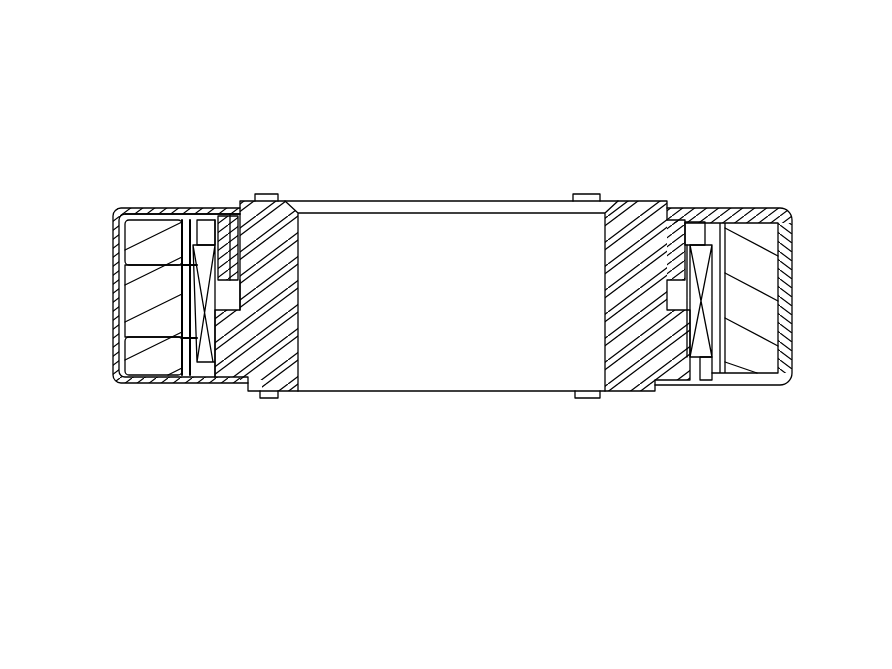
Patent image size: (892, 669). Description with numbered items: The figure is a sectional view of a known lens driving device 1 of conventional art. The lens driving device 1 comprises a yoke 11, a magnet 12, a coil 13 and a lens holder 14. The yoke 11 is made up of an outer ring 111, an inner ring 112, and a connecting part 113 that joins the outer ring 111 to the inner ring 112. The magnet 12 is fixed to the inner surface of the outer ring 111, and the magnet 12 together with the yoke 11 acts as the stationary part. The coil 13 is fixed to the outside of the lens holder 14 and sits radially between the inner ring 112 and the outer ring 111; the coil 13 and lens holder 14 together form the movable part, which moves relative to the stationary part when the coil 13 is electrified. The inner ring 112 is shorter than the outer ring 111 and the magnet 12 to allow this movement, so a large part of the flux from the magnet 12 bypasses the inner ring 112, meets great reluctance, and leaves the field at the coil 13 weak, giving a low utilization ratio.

The lens driving device 1 is at (570, 163).
The yoke 11 is at (63, 95).
The outer ring 111 is at (113, 230).
The inner ring 112 is at (228, 216).
The connecting part 113 is at (158, 208).
The magnet 12 is at (149, 352).
The coil 13 is at (200, 345).
The lens holder 14 is at (433, 332).